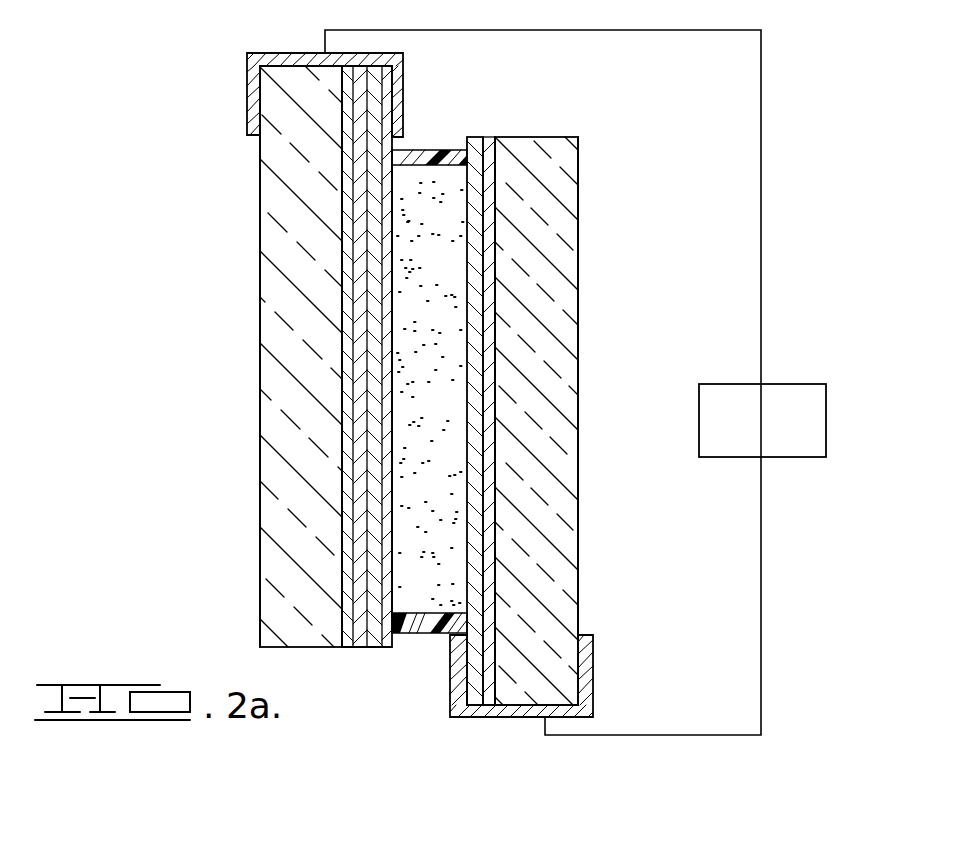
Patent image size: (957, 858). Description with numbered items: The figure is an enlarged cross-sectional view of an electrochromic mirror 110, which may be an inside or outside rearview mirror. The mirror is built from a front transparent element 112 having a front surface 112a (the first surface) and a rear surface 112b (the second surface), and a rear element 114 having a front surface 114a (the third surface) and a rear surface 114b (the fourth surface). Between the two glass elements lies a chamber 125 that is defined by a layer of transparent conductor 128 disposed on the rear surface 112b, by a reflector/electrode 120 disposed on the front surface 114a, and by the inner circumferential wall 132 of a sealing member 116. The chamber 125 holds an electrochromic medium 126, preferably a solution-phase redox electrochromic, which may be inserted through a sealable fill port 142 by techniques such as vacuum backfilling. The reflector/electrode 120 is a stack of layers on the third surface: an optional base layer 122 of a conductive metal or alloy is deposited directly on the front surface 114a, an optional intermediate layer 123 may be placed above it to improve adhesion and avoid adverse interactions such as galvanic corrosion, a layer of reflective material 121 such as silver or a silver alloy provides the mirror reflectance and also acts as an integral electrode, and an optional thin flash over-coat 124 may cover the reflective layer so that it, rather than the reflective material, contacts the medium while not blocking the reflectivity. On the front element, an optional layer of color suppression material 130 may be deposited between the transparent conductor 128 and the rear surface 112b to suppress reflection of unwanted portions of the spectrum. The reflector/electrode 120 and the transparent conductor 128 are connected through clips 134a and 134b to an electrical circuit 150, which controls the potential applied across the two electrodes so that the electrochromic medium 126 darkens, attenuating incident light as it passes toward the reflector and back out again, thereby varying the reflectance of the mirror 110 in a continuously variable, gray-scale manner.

The electrochromic mirror 110 is at (193, 220).
The front transparent element 112 is at (560, 222).
The front surface of front transparent element 112a is at (578, 330).
The rear surface of front transparent element 112b is at (490, 157).
The rear element 114 is at (280, 555).
The front surface of rear element 114a is at (345, 503).
The rear surface of rear element 114b is at (260, 613).
The sealing member 116 is at (443, 158).
The reflector/electrode 120 is at (398, 379).
The reflective material layer 121 is at (375, 444).
The base layer 122 is at (352, 320).
The intermediate layer 123 is at (360, 393).
The flash over-coat 124 is at (393, 550).
The chamber 125 is at (450, 503).
The electrochromic medium 126 is at (453, 570).
The transparent conductor 128 is at (475, 143).
The color suppression material 130 is at (490, 143).
The inner circumferential wall 132 is at (405, 170).
The clip 134a is at (253, 90).
The clip 134b is at (590, 672).
The sealable fill port 142 is at (408, 633).
The electrical circuit 150 is at (800, 366).